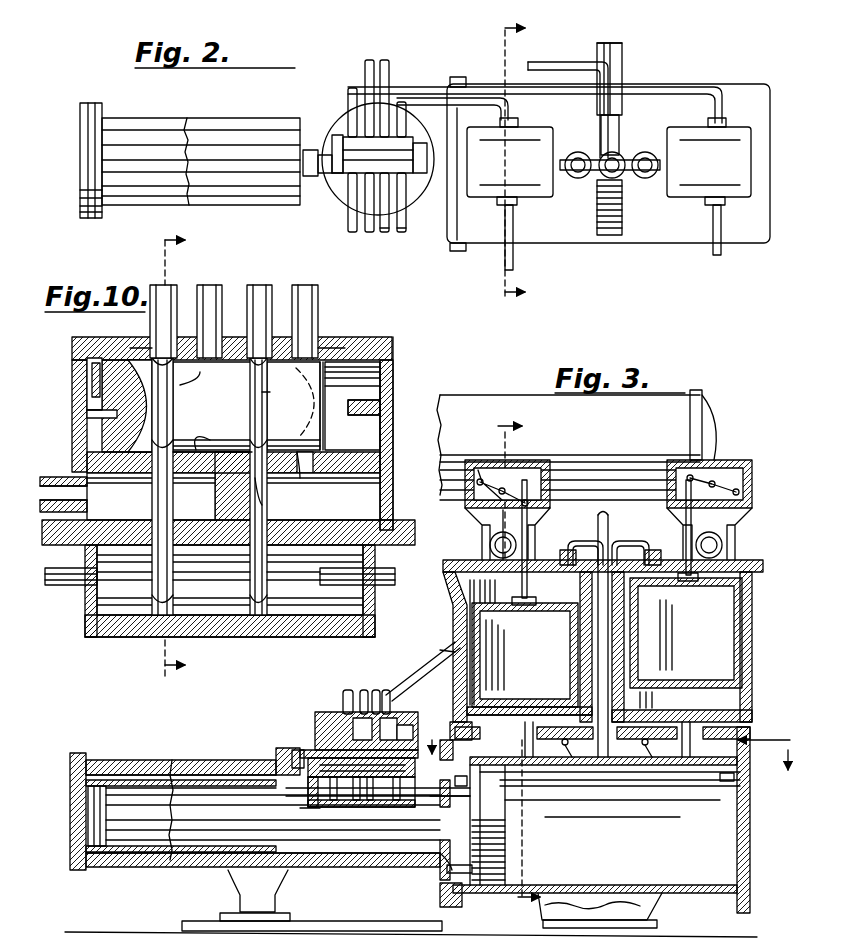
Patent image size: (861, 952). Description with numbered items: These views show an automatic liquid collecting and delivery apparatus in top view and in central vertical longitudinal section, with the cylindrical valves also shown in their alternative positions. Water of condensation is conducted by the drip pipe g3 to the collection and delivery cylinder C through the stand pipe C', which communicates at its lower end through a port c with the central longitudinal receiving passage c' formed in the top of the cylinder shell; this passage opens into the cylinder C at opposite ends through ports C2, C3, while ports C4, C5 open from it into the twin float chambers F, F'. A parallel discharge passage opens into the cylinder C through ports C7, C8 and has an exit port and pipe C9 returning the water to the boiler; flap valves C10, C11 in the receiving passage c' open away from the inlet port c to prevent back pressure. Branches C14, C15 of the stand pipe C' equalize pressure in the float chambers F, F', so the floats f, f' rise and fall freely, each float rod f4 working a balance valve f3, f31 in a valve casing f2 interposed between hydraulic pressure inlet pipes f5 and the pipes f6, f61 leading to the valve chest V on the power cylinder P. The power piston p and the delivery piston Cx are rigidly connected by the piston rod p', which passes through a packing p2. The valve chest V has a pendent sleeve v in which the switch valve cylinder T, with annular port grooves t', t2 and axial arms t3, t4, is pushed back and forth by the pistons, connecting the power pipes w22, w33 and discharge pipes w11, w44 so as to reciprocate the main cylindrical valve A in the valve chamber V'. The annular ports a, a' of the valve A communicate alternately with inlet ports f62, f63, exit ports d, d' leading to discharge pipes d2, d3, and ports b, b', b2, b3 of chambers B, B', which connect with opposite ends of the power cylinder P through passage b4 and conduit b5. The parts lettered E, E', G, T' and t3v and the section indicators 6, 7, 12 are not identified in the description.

In FIG. 2, the power cylinder P is at (206, 158).
In FIG. 3, the power cylinder P is at (256, 833).
In FIG. 2, the valve chest V is at (351, 154).
In FIG. 10, the valve chest V is at (365, 433).
In FIG. 3, the valve chest V is at (362, 716).
In FIG. 2, the valve chamber V' is at (311, 213).
In FIG. 10, the valve chamber V' is at (357, 422).
In FIG. 2, the discharge pipe d2 is at (368, 60).
In FIG. 10, the discharge pipe d2 is at (208, 285).
In FIG. 3, the discharge pipe d2 is at (365, 692).
In FIG. 2, the discharge pipe d3 is at (386, 60).
In FIG. 10, the discharge pipe d3 is at (258, 285).
In FIG. 3, the discharge pipe d3 is at (387, 692).
In FIG. 10, the exit port d is at (276, 378).
In FIG. 10, the exit port d' is at (190, 384).
In FIG. 2, the discharge pipe w11 is at (343, 183).
In FIG. 2, the power pipe w22 is at (353, 233).
In FIG. 2, the power pipe w33 is at (385, 233).
In FIG. 2, the discharge pipe w44 is at (402, 233).
In FIG. 2, the pipe f6 is at (347, 103).
In FIG. 10, the pipe f6 is at (160, 300).
In FIG. 3, the pipe f6 is at (347, 694).
In FIG. 2, the pipe f61 is at (458, 88).
In FIG. 10, the pipe f61 is at (305, 285).
In FIG. 3, the pipe f61 is at (454, 648).
In FIG. 10, the inlet port f62 is at (318, 345).
In FIG. 10, the inlet port f63 is at (152, 350).
In FIG. 2, the hydraulic pressure inlet pipe f5 is at (513, 270).
In FIG. 2, the valve casing f2 is at (610, 162).
In FIG. 3, the valve casing f2 is at (520, 462).
In FIG. 3, the float rod f4 is at (652, 498).
In FIG. 3, the balance valve f3 is at (723, 550).
In FIG. 3, the balance valve f31 is at (495, 548).
In FIG. 3, the float f is at (525, 655).
In FIG. 3, the float f' is at (686, 633).
In FIG. 2, the float chamber F is at (510, 177).
In FIG. 2, the float chamber F' is at (709, 176).
In FIG. 3, the chamber E is at (506, 637).
In FIG. 3, the chamber E' is at (702, 647).
In FIG. 3, the cylinder G is at (576, 445).
In FIG. 2, the collection and delivery cylinder C is at (609, 176).
In FIG. 3, the collection and delivery cylinder C is at (411, 832).
In FIG. 2, the stand pipe C' is at (632, 110).
In FIG. 3, the stand pipe C' is at (638, 633).
In FIG. 3, the port C2 is at (458, 740).
In FIG. 3, the port C3 is at (740, 762).
In FIG. 3, the port C4 is at (529, 722).
In FIG. 3, the port C5 is at (688, 728).
In FIG. 3, the port C7 is at (462, 786).
In FIG. 3, the port C8 is at (740, 786).
In FIG. 2, the exit port and pipe C9 is at (612, 48).
In FIG. 3, the flap valve C10 is at (566, 748).
In FIG. 3, the flap valve C11 is at (647, 748).
In FIG. 2, the branch C14 is at (580, 178).
In FIG. 3, the branch C14 is at (580, 548).
In FIG. 2, the branch C15 is at (645, 178).
In FIG. 3, the branch C15 is at (646, 551).
In FIG. 3, the delivery piston Cx is at (468, 872).
In FIG. 3, the port c is at (620, 807).
In FIG. 3, the central longitudinal passage c' is at (620, 792).
In FIG. 2, the drip pipe g3 is at (532, 62).
In FIG. 10, the inlet port b is at (293, 479).
In FIG. 10, the exit port b' is at (262, 492).
In FIG. 10, the inlet port b2 is at (162, 463).
In FIG. 10, the exit port b3 is at (210, 440).
In FIG. 10, the passage b4 is at (388, 522).
In FIG. 2, the conduit b5 is at (138, 160).
In FIG. 10, the conduit b5 is at (55, 492).
In FIG. 3, the conduit b5 is at (200, 760).
In FIG. 10, the chamber B is at (317, 496).
In FIG. 10, the chamber B' is at (151, 496).
In FIG. 3, the chamber B' is at (355, 742).
In FIG. 10, the main cylindrical valve A is at (212, 426).
In FIG. 10, the annular port a is at (271, 486).
In FIG. 10, the annular port a' is at (155, 486).
In FIG. 10, the switch valve cylinder T is at (211, 569).
In FIG. 3, the switch valve cylinder T is at (361, 827).
In FIG. 3, the valve T' is at (377, 845).
In FIG. 10, the annular peripheral port groove t' is at (124, 569).
In FIG. 10, the annular peripheral port groove t2 is at (263, 582).
In FIG. 10, the axial arm t3 is at (55, 576).
In FIG. 10, the axial arm t4 is at (392, 576).
In FIG. 3, the axial arm t4 is at (430, 800).
In FIG. 3, the shaft t3v is at (330, 796).
In FIG. 10, the pendent sleeve v is at (68, 652).
In FIG. 3, the power piston p is at (64, 816).
In FIG. 3, the piston rod p' is at (273, 843).
In FIG. 3, the packing p2 is at (450, 862).
In FIG. 2, the section line 6 is at (508, 163).
In FIG. 3, the section line 6 is at (513, 664).
In FIG. 3, the section line 7 is at (612, 747).
In FIG. 10, the section line 12 is at (187, 454).